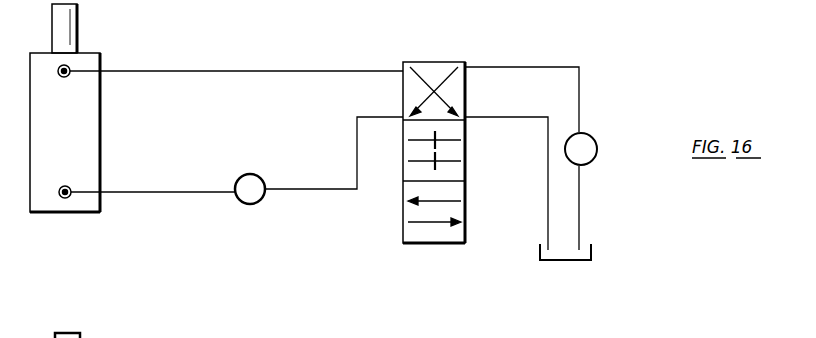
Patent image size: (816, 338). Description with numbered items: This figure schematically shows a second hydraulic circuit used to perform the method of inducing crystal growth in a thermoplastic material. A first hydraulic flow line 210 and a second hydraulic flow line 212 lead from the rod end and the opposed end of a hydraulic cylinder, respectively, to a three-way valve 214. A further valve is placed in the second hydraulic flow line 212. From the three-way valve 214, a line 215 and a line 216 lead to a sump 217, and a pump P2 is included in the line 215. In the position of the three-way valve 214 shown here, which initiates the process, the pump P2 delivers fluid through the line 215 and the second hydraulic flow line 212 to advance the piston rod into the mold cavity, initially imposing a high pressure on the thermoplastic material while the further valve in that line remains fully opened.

The first hydraulic flow line 210 is at (201, 66).
The second hydraulic flow line 212 is at (182, 187).
The three-way valve 214 is at (444, 58).
The line 215 is at (580, 80).
The line 216 is at (546, 180).
The sump 217 is at (592, 263).
The pump P2 is at (589, 149).